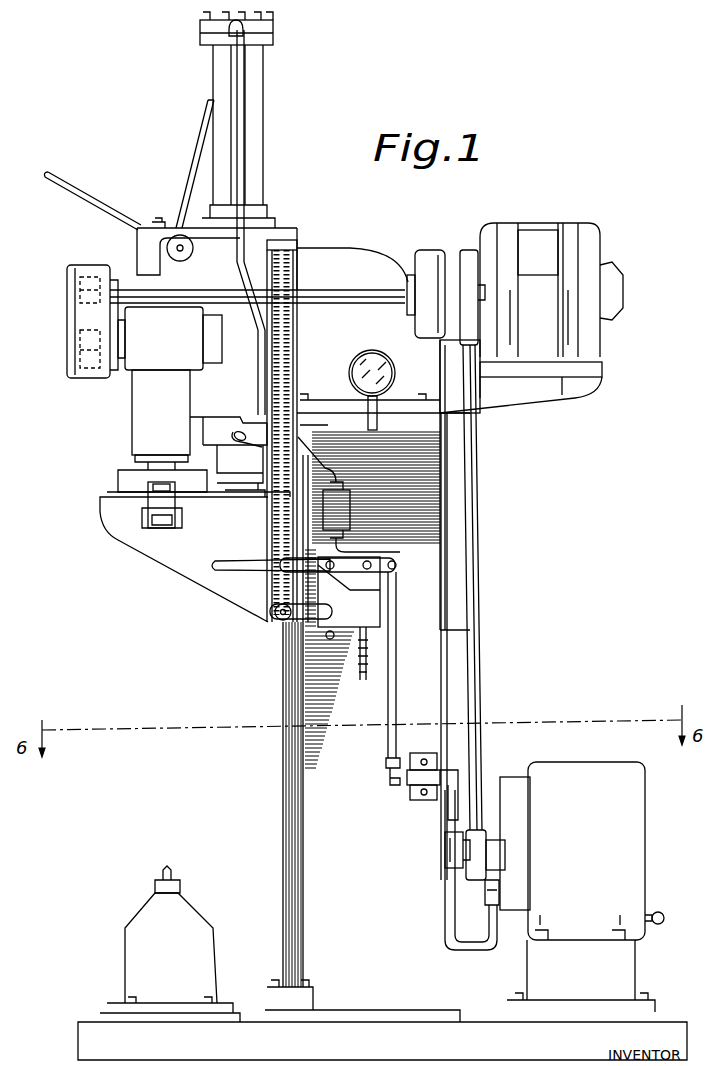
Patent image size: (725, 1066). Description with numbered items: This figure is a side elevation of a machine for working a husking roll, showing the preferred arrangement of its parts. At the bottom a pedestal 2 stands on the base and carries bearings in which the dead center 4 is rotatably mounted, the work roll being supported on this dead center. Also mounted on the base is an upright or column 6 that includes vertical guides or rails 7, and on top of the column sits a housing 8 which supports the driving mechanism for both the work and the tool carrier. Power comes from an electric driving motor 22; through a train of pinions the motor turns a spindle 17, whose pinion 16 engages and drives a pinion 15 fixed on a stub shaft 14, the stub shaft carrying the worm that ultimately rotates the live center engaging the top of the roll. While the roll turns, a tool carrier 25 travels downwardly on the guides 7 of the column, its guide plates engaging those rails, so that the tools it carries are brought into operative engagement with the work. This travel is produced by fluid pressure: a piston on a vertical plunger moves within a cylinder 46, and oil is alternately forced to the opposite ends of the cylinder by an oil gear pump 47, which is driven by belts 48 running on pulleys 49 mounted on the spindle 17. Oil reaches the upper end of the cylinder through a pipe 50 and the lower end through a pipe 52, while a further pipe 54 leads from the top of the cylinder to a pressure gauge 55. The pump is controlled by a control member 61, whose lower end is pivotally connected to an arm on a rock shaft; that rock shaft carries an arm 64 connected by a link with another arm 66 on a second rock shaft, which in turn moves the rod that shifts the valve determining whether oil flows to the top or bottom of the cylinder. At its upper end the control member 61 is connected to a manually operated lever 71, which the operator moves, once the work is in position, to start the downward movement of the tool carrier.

The pedestal 2 is at (150, 922).
The dead center 4 is at (172, 874).
The upright or column 6 is at (440, 955).
The vertical guides or rails 7 is at (283, 692).
The housing 8 is at (135, 398).
The stub shaft 14 is at (170, 338).
The pinion 15 is at (82, 362).
The pinion 16 is at (82, 284).
The spindle 17 is at (352, 292).
The electric driving motor 22 is at (592, 252).
The tool carrier 25 is at (183, 555).
The cylinder 46 is at (218, 66).
The oil gear pump 47 is at (620, 818).
The belts 48 is at (479, 605).
The pulleys 49 is at (462, 258).
The pipe 50 is at (236, 80).
The pipe 52 is at (443, 552).
The pipe 54 is at (250, 62).
The pressure gauge 55 is at (372, 356).
The control member 61 is at (398, 692).
The arm 64 is at (458, 800).
The arm 66 is at (455, 835).
The manually operated lever 71 is at (265, 572).